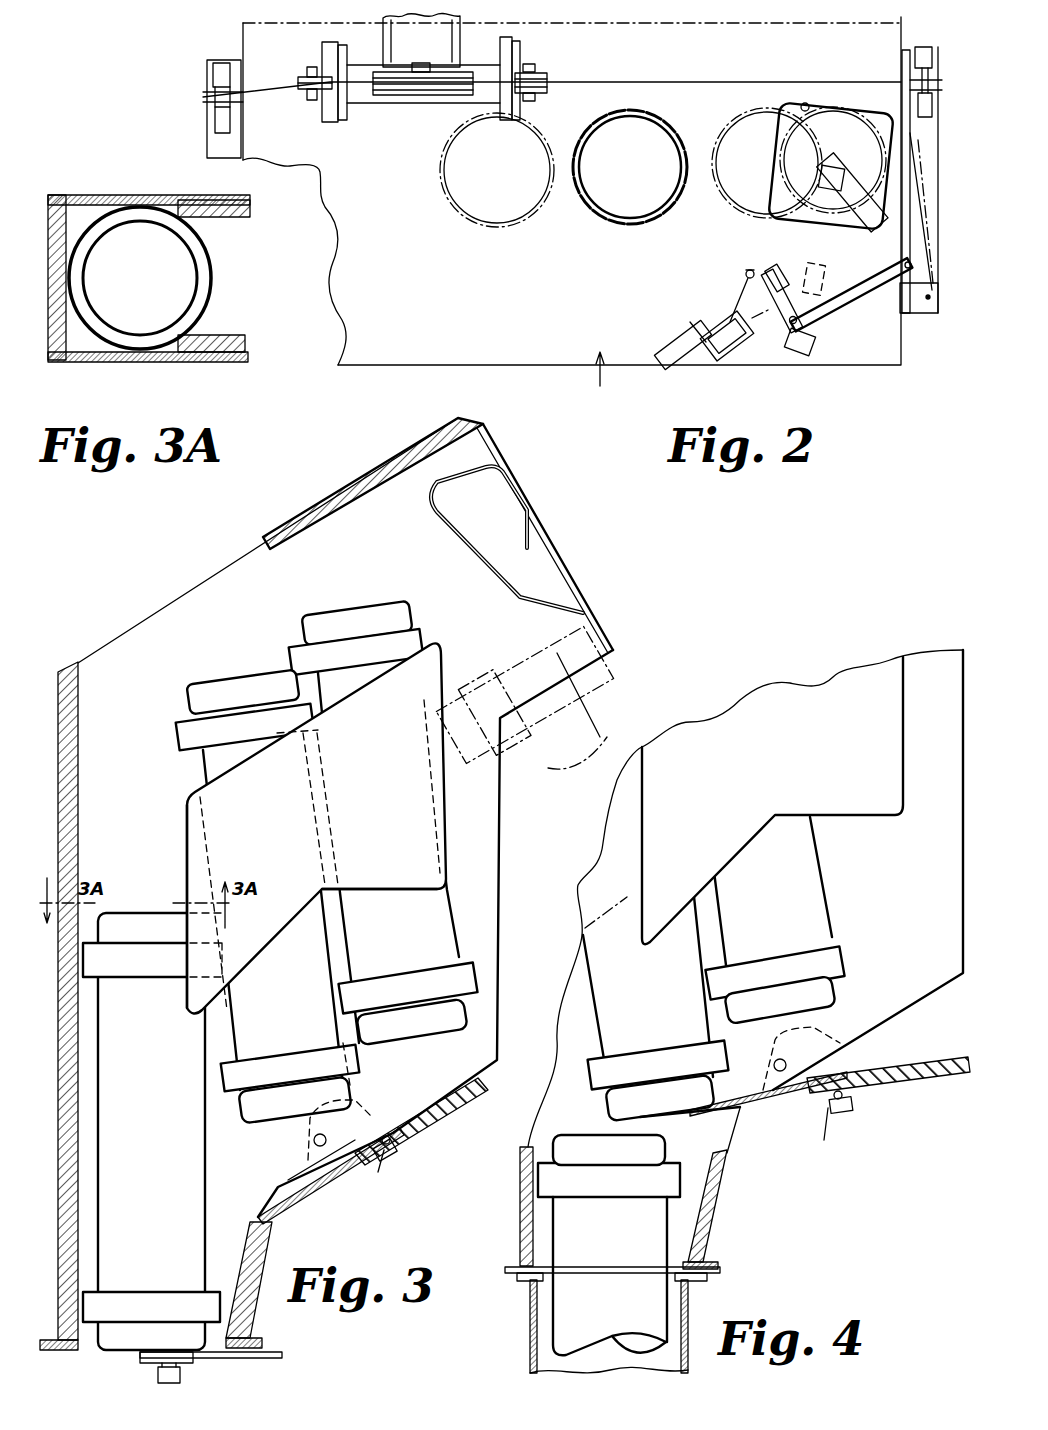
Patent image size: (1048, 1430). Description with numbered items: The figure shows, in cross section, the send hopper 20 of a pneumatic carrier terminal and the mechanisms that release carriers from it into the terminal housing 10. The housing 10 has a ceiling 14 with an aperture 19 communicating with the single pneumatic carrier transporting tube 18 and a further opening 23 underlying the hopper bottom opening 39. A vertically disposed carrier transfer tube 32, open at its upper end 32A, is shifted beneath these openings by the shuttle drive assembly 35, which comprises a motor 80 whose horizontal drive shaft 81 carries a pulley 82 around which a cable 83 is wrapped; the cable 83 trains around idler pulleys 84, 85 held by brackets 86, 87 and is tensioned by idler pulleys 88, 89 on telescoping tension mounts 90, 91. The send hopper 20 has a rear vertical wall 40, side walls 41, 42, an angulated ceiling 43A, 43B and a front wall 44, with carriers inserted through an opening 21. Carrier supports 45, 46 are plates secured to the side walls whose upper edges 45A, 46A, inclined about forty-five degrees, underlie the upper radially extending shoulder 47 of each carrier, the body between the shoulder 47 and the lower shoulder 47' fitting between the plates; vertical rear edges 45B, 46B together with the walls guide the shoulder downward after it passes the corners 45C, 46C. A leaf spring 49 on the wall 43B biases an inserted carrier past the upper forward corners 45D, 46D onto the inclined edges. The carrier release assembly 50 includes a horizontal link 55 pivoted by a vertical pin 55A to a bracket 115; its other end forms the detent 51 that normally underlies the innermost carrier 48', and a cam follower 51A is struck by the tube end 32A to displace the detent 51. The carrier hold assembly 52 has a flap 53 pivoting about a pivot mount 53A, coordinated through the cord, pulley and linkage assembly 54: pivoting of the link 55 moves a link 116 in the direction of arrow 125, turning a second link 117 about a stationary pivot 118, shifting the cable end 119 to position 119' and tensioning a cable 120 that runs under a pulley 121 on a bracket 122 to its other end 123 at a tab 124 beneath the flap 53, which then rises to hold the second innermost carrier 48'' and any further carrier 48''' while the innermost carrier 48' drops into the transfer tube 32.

In FIG. 2, the housing 10 is at (604, 378).
In FIG. 2, the ceiling 14 is at (572, 191).
In FIG. 3, the ceiling 14 is at (262, 1340).
In FIG. 4, the ceiling 14 is at (715, 1260).
In FIG. 2, the pneumatic carrier transporting tube 18 is at (647, 217).
In FIG. 2, the aperture 19 is at (647, 200).
In FIG. 3, the send hopper 20 is at (126, 582).
In FIG. 4, the send hopper 20 is at (822, 1204).
In FIG. 3, the opening 21 is at (592, 692).
In FIG. 2, the opening 23 is at (828, 82).
In FIG. 3, the opening 23 is at (88, 1347).
In FIG. 4, the opening 23 is at (520, 1242).
In FIG. 2, the carrier transfer tube 32 is at (507, 228).
In FIG. 4, the carrier transfer tube 32 is at (692, 1316).
In FIG. 4, the upper end of transfer tube 32A is at (692, 1293).
In FIG. 2, the shuttle drive assembly 35 is at (405, 118).
In FIG. 3, the opening 39 is at (90, 1312).
In FIG. 4, the opening 39 is at (667, 1268).
In FIG. 3A, the rear vertical wall 40 is at (55, 360).
In FIG. 3, the rear vertical wall 40 is at (80, 818).
In FIG. 4, the rear vertical wall 40 is at (520, 1208).
In FIG. 3A, the side wall 41 is at (95, 190).
In FIG. 3, the side wall 41 is at (180, 580).
In FIG. 4, the side wall 41 is at (590, 880).
In FIG. 3A, the side wall 42 is at (100, 362).
In FIG. 3, the angulated ceiling 43A is at (375, 475).
In FIG. 3, the angulated ceiling / front wall 43B is at (500, 476).
In FIG. 3, the front wall 44 is at (270, 1252).
In FIG. 4, the front wall 44 is at (727, 1165).
In FIG. 3A, the carrier support 45 is at (230, 218).
In FIG. 3, the carrier support 45 is at (405, 890).
In FIG. 3, the upper edge 45A is at (338, 683).
In FIG. 3A, the rear edge 45B is at (165, 205).
In FIG. 3, the rear edge 45B is at (185, 855).
In FIG. 3, the corner 45C is at (185, 792).
In FIG. 3, the upper forward corner 45D is at (443, 640).
In FIG. 3A, the carrier support 46 is at (222, 330).
In FIG. 3, the carrier support 46 is at (375, 865).
In FIG. 4, the carrier support 46 is at (772, 800).
In FIG. 3, the upper edge 46A is at (356, 735).
In FIG. 3A, the rear edge 46B is at (165, 362).
In FIG. 3, the rear edge 46B is at (134, 845).
In FIG. 3, the corner 46C is at (135, 767).
In FIG. 3, the upper forward corner 46D is at (452, 581).
In FIG. 3A, the upper radially extending shoulder 47 is at (157, 278).
In FIG. 3, the upper radially extending shoulder 47 is at (304, 823).
In FIG. 4, the upper radially extending shoulder 47 is at (691, 1020).
In FIG. 3, the lower circular shoulder 47' is at (151, 1116).
In FIG. 3, the innermost carrier 48' is at (151, 1131).
In FIG. 3, the second innermost carrier 48'' is at (268, 896).
In FIG. 3, the carrier 48''' is at (559, 695).
In FIG. 3, the leaf spring 49 is at (458, 550).
In FIG. 2, the carrier release assembly 50 is at (890, 352).
In FIG. 3, the carrier release assembly 50 is at (305, 1369).
In FIG. 2, the detent 51 is at (917, 145).
In FIG. 2, the cam follower 51A is at (832, 170).
In FIG. 3, the cam follower 51A is at (158, 1376).
In FIG. 3, the carrier hold assembly 52 is at (368, 1199).
In FIG. 4, the carrier hold assembly 52 is at (888, 1106).
In FIG. 3, the flap 53 is at (285, 1212).
In FIG. 4, the flap 53 is at (680, 1125).
In FIG. 3, the pivot mount 53A is at (314, 1140).
In FIG. 4, the pivot mount 53A is at (770, 1063).
In FIG. 2, the cord, pulley and linkage assembly 54 is at (822, 262).
In FIG. 2, the link 55 is at (847, 230).
In FIG. 3, the link 55 is at (228, 1363).
In FIG. 2, the vertical pin 55A is at (922, 313).
In FIG. 2, the motor 80 is at (421, 40).
In FIG. 2, the drive shaft 81 is at (432, 48).
In FIG. 2, the pulley 82 is at (431, 95).
In FIG. 2, the cable 83 is at (272, 95).
In FIG. 2, the idler pulley 84 is at (940, 80).
In FIG. 2, the idler pulley 85 is at (215, 98).
In FIG. 2, the bracket 86 is at (913, 47).
In FIG. 2, the bracket 87 is at (217, 60).
In FIG. 2, the idler pulley 88 is at (299, 82).
In FIG. 2, the idler pulley 89 is at (548, 80).
In FIG. 2, the telescoping tension mount 90 is at (330, 122).
In FIG. 2, the telescoping tension mount 91 is at (515, 60).
In FIG. 2, the bracket 115 is at (938, 278).
In FIG. 2, the link 116 is at (843, 308).
In FIG. 2, the second link 117 is at (773, 318).
In FIG. 2, the stationary pivot 118 is at (803, 352).
In FIG. 2, the cable end 119 is at (776, 268).
In FIG. 2, the phantom line position of cable end 119' is at (842, 277).
In FIG. 2, the cable 120 is at (743, 302).
In FIG. 3, the cable 120 is at (383, 1172).
In FIG. 4, the cable 120 is at (820, 1142).
In FIG. 2, the pulley 121 is at (728, 345).
In FIG. 2, the bracket 122 is at (694, 348).
In FIG. 2, the cable end 123 is at (746, 276).
In FIG. 3, the cable end 123 is at (392, 1145).
In FIG. 4, the cable end 123 is at (835, 1100).
In FIG. 2, the tab 124 is at (752, 270).
In FIG. 3, the tab 124 is at (398, 1152).
In FIG. 4, the tab 124 is at (845, 1114).
In FIG. 2, the arrow 125 is at (827, 318).